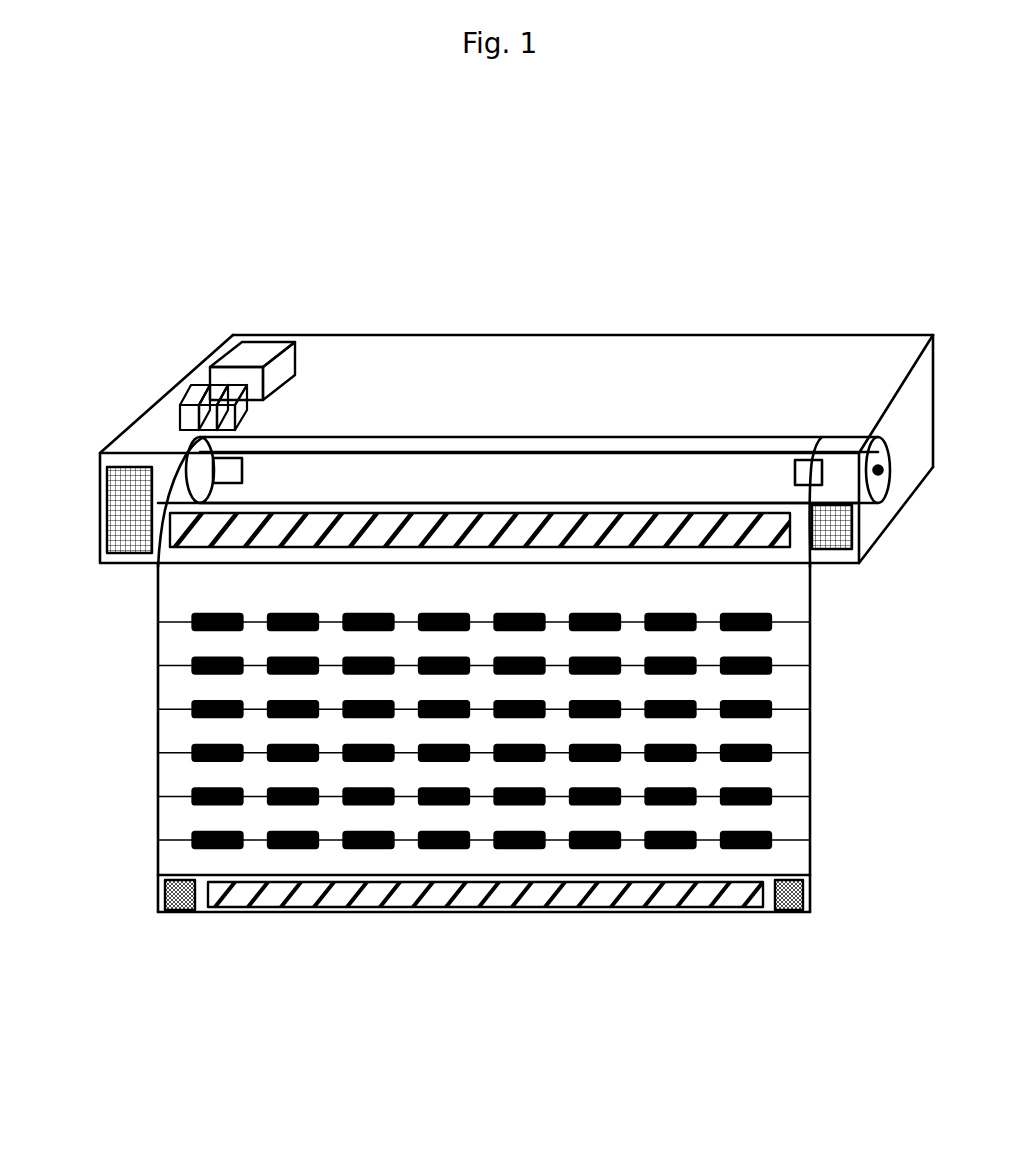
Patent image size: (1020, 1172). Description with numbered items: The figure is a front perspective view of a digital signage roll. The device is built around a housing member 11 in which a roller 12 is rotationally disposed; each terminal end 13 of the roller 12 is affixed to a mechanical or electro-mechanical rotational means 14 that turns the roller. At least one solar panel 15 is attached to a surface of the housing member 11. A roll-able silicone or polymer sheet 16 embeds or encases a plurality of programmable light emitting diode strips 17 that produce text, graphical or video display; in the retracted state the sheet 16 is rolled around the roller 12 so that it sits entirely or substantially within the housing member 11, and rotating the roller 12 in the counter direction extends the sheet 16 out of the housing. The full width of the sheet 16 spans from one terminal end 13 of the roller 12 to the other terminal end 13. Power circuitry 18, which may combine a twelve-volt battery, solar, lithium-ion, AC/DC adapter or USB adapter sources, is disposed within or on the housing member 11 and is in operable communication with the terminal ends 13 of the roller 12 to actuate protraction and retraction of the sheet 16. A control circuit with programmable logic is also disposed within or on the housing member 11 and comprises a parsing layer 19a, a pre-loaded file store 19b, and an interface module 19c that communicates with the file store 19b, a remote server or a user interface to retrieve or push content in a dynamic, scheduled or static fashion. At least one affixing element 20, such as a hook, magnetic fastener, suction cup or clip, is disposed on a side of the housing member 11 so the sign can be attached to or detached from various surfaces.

The housing member 11 is at (493, 332).
The roller 12 is at (615, 437).
The terminal end 13 is at (184, 450).
The rotational means 14 is at (808, 452).
The solar panel 15 is at (158, 567).
The sheet 16 is at (817, 797).
The programmable light emitting diode strips 17 is at (183, 788).
The power circuitry 18 is at (270, 346).
The parsing layer 19a is at (172, 396).
The pre-loaded file store 19b is at (215, 378).
The interface module 19c is at (233, 390).
The affixing element 20 is at (135, 539).